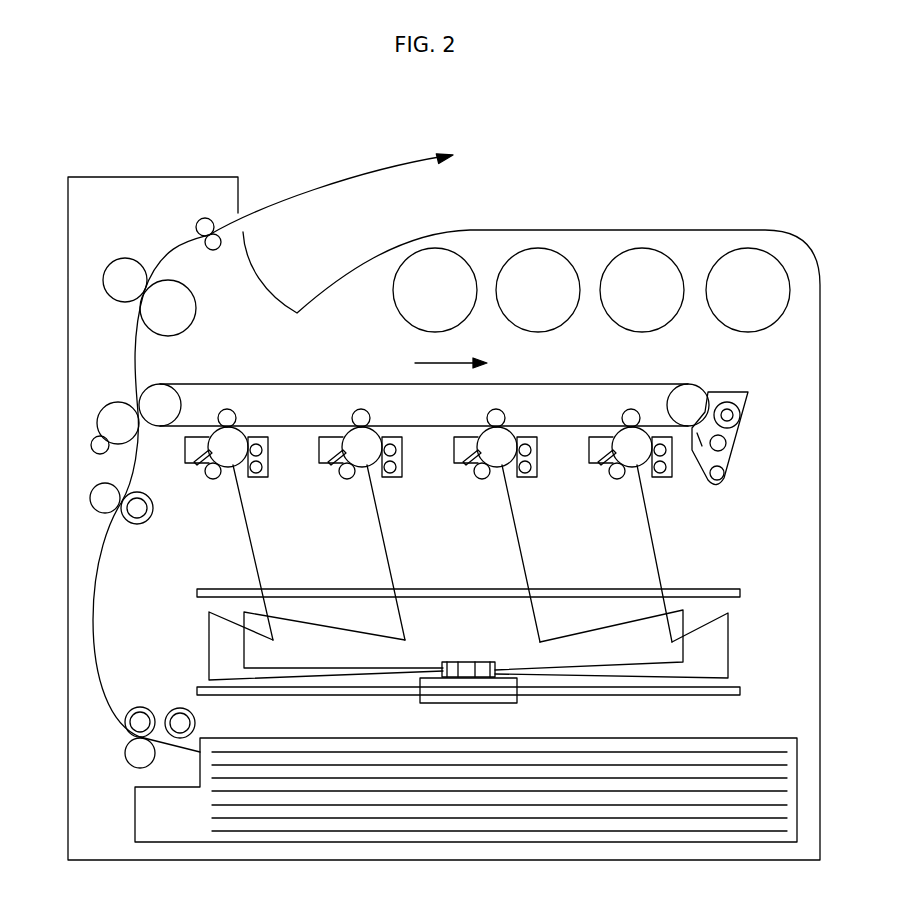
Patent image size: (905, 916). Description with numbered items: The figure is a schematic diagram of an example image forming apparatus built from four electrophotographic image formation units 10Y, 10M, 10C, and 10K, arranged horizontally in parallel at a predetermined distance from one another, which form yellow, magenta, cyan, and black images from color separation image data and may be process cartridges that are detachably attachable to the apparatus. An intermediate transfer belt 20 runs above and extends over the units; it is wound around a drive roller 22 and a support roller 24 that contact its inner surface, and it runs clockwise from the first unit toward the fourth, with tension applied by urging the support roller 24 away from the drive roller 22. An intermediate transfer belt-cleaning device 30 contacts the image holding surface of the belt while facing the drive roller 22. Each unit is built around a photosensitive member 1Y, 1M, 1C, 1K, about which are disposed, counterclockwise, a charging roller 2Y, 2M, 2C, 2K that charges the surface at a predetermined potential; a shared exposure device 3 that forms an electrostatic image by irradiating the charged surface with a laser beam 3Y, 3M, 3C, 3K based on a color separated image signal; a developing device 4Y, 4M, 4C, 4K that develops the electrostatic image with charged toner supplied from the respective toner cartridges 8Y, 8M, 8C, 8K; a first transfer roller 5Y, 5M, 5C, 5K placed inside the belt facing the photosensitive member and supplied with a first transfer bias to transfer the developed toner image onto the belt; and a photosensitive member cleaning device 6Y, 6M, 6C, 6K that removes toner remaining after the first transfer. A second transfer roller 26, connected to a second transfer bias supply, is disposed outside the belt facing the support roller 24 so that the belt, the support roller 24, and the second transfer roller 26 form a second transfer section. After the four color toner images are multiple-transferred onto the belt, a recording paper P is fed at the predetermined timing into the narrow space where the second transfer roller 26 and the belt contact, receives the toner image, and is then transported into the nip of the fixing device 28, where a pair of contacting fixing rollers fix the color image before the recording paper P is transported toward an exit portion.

The photosensitive member 1K is at (236, 466).
The photosensitive member 1C is at (370, 466).
The photosensitive member 1M is at (505, 466).
The photosensitive member 1Y is at (640, 466).
The charging roller 2K is at (213, 480).
The charging roller 2C is at (347, 480).
The charging roller 2M is at (482, 480).
The charging roller 2Y is at (617, 480).
The exposure device 3 is at (472, 596).
The laser beam 3K is at (208, 640).
The laser beam 3C is at (303, 623).
The laser beam 3M is at (587, 632).
The laser beam 3Y is at (731, 628).
The developing device 4K is at (269, 465).
The developing device 4C is at (403, 465).
The developing device 4M is at (538, 465).
The developing device 4Y is at (671, 477).
The first transfer roller 5K is at (234, 413).
The first transfer roller 5C is at (368, 413).
The first transfer roller 5M is at (503, 413).
The first transfer roller 5Y is at (636, 409).
The photosensitive member cleaning device 6K is at (189, 465).
The photosensitive member cleaning device 6C is at (323, 465).
The photosensitive member cleaning device 6M is at (458, 465).
The photosensitive member cleaning device 6Y is at (593, 465).
The toner cartridge 8K is at (434, 266).
The toner cartridge 8C is at (537, 266).
The toner cartridge 8M is at (641, 266).
The toner cartridge 8Y is at (744, 266).
The image formation unit 10K is at (234, 483).
The image formation unit 10C is at (367, 483).
The image formation unit 10M is at (503, 483).
The image formation unit 10Y is at (638, 458).
The intermediate transfer belt 20 is at (587, 383).
The drive roller 22 is at (690, 395).
The support roller 24 is at (156, 387).
The second transfer roller 26 is at (105, 424).
The fixing device 28 is at (147, 323).
The intermediate transfer belt-cleaning device 30 is at (750, 398).
The recording paper P is at (756, 834).